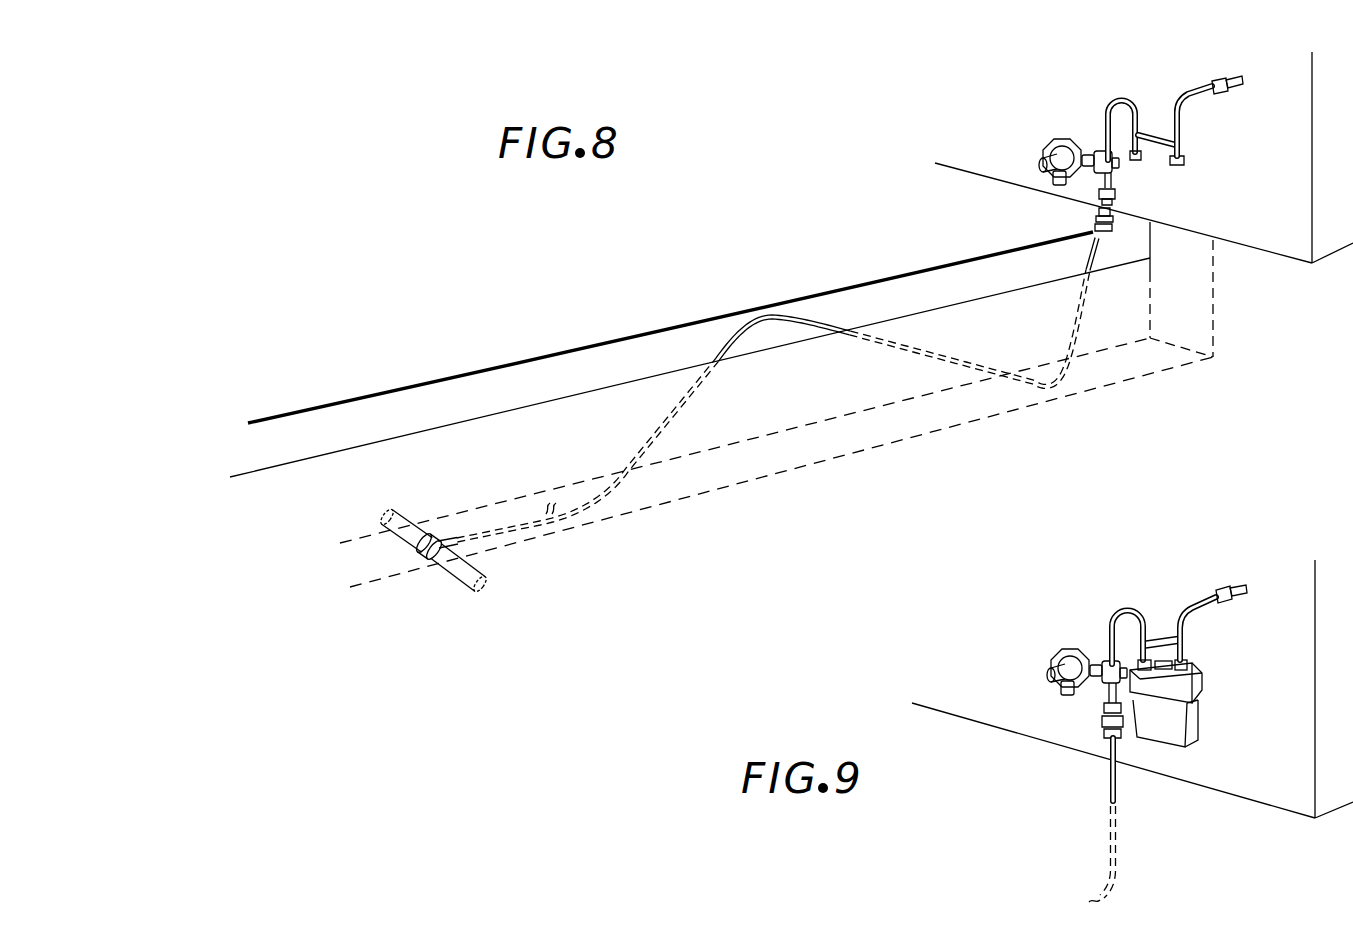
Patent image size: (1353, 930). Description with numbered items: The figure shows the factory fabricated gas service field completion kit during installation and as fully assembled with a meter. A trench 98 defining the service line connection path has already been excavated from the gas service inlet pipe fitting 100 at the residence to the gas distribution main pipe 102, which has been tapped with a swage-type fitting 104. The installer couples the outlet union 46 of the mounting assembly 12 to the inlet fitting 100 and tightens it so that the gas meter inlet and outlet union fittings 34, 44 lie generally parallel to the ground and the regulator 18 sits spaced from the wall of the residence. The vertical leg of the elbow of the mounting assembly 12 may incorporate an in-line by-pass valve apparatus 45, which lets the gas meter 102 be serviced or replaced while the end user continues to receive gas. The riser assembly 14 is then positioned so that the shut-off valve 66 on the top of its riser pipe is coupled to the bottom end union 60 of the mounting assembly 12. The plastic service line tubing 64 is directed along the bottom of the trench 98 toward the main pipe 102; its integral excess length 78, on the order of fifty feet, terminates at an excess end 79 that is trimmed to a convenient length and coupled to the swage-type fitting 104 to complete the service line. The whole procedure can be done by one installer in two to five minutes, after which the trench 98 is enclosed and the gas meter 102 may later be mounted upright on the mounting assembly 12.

In FIG. 8, the gas meter mounting assembly 12 is at (1104, 102).
In FIG. 9, the gas meter mounting assembly 12 is at (1105, 610).
In FIG. 8, the riser assembly 14 is at (1110, 247).
In FIG. 9, the riser assembly 14 is at (1093, 716).
In FIG. 8, the regulator 18 is at (1043, 144).
In FIG. 8, the gas meter inlet union fitting 34 is at (1138, 161).
In FIG. 8, the gas meter outlet union fitting 44 is at (1185, 161).
In FIG. 8, the in-line by-pass valve apparatus 45 is at (1188, 133).
In FIG. 9, the in-line by-pass valve apparatus 45 is at (1198, 641).
In FIG. 8, the outlet union 46 is at (1208, 86).
In FIG. 9, the outlet union 46 is at (1223, 588).
In FIG. 8, the bottom end union 60 is at (1117, 196).
In FIG. 8, the plastic service line tubing 64 is at (770, 316).
In FIG. 8, the shut-off valve 66 is at (1118, 219).
In FIG. 8, the excess length 78 is at (590, 500).
In FIG. 8, the excess end 79 is at (463, 537).
In FIG. 8, the trench 98 is at (633, 359).
In FIG. 8, the gas service inlet pipe fitting 100 is at (1238, 78).
In FIG. 9, the gas service inlet pipe fitting 100 is at (1246, 593).
In FIG. 8, the gas distribution main pipe 102 is at (457, 585).
In FIG. 9, the gas distribution main pipe 102 is at (1199, 743).
In FIG. 8, the swage-type fitting 104 is at (442, 551).